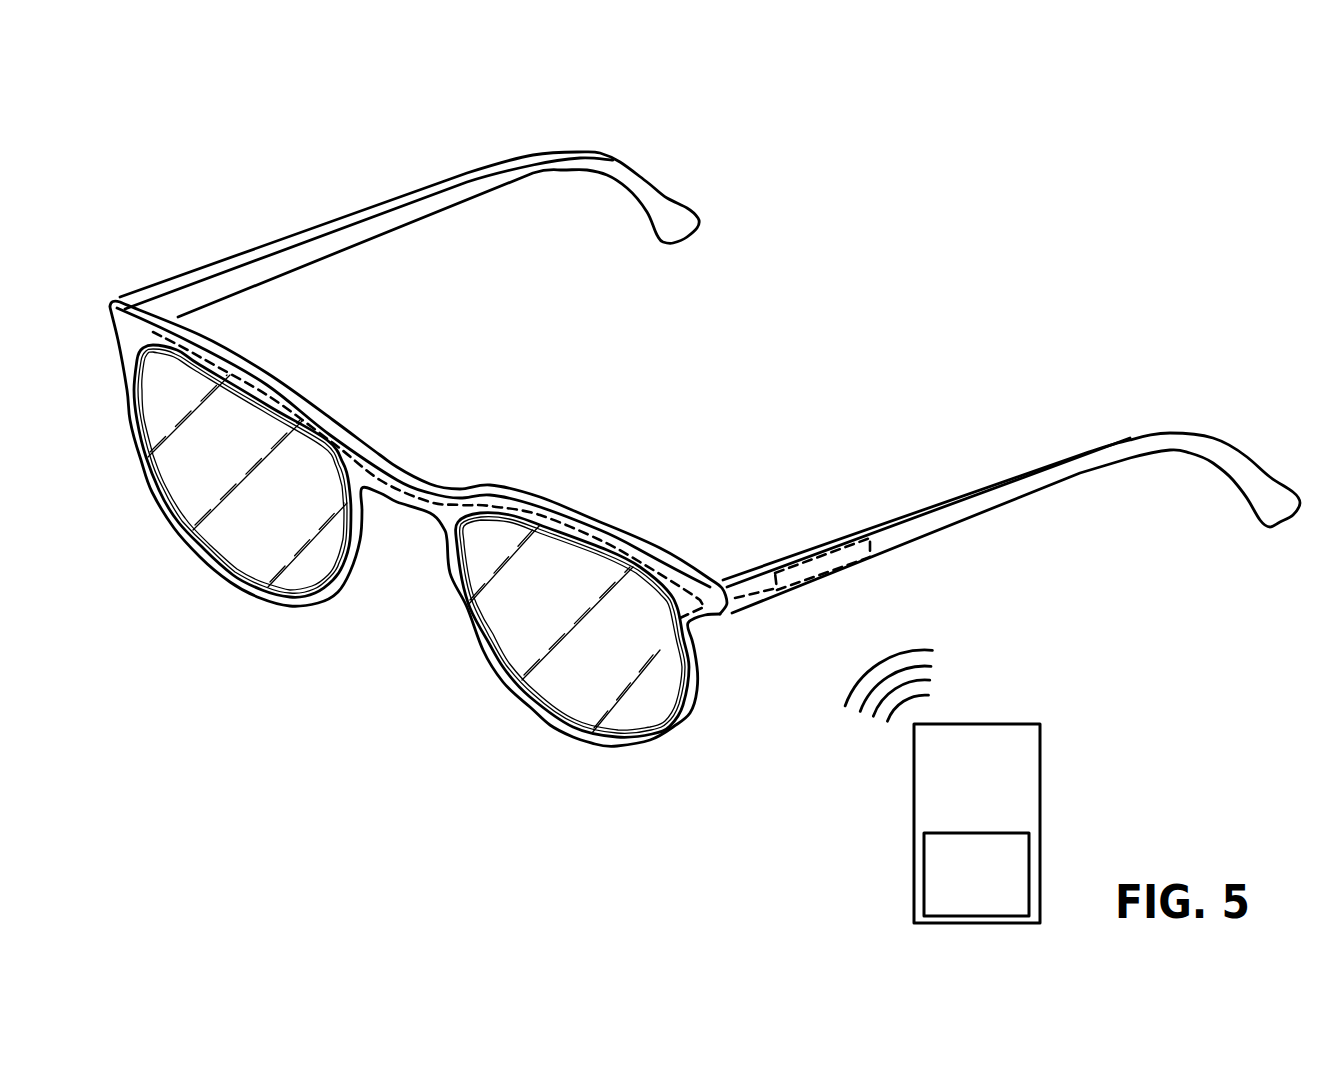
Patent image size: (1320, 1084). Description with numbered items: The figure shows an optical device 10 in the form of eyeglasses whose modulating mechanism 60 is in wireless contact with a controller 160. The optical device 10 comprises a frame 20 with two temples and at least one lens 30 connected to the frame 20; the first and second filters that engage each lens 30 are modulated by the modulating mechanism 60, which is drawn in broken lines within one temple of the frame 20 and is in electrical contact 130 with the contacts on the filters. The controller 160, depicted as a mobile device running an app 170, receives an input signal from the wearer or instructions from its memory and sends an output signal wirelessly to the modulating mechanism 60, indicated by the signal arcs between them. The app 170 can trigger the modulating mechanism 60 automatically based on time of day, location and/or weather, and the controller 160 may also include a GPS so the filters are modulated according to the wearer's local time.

The optical device 10 is at (300, 137).
The frame 20 is at (172, 285).
The lens 30 is at (249, 420).
The modulating mechanism 60 is at (828, 562).
The electrical contact 130 is at (753, 593).
The controller 160 is at (999, 818).
The app 170 is at (999, 903).